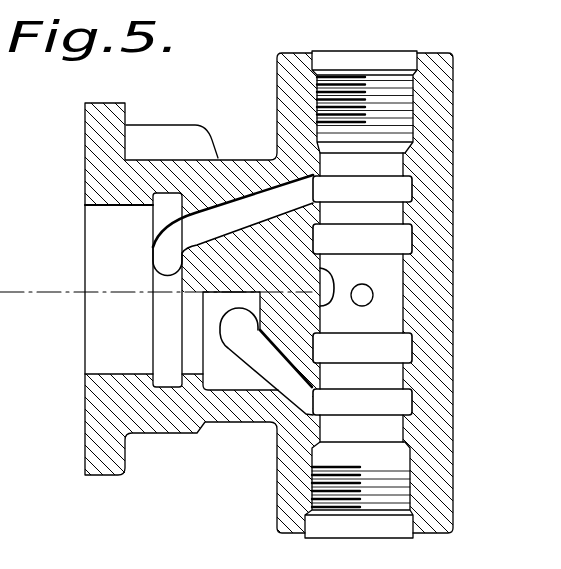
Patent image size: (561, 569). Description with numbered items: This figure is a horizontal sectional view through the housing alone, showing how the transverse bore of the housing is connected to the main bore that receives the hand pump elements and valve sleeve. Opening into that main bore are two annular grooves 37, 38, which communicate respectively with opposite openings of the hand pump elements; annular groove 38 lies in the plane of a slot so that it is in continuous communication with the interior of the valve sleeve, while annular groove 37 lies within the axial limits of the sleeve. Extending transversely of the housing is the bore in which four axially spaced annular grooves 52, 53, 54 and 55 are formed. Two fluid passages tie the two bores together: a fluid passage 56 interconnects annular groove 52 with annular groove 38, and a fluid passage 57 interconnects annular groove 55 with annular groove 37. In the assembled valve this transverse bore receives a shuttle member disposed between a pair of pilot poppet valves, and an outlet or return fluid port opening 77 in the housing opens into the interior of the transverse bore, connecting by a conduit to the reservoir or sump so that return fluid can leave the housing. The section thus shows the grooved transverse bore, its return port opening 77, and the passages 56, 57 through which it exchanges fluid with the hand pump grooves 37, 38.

The annular groove 37 is at (163, 392).
The annular groove 38 is at (236, 395).
The annular groove 52 is at (410, 405).
The annular groove 53 is at (410, 351).
The annular groove 54 is at (410, 241).
The annular groove 55 is at (410, 193).
The fluid passage 56 is at (282, 395).
The fluid passage 57 is at (253, 195).
The outlet or return fluid port opening 77 is at (322, 272).